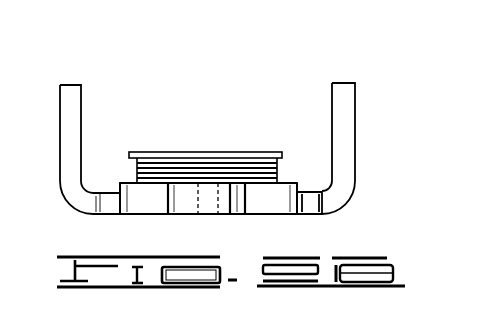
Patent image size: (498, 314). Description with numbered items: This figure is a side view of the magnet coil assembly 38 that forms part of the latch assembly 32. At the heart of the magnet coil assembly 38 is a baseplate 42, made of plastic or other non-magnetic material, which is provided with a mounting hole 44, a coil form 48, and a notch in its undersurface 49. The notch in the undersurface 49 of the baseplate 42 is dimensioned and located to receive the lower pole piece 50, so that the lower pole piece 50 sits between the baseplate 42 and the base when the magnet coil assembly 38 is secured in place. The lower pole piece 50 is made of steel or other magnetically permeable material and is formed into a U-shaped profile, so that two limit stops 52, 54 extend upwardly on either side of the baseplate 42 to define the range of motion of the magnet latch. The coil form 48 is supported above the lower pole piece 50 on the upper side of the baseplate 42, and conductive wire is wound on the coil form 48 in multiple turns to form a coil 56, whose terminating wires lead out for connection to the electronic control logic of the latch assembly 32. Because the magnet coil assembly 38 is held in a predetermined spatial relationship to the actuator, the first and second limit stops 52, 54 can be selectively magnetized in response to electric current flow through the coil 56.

The latch assembly 32 is at (134, 90).
The magnet coil assembly 38 is at (215, 134).
The baseplate 42 is at (130, 183).
The mounting hole 44 is at (212, 222).
The coil form 48 is at (242, 152).
The undersurface 49 is at (133, 216).
The lower pole piece 50 is at (312, 203).
The limit stop 52 is at (345, 92).
The limit stop 54 is at (72, 85).
The coil 56 is at (153, 163).